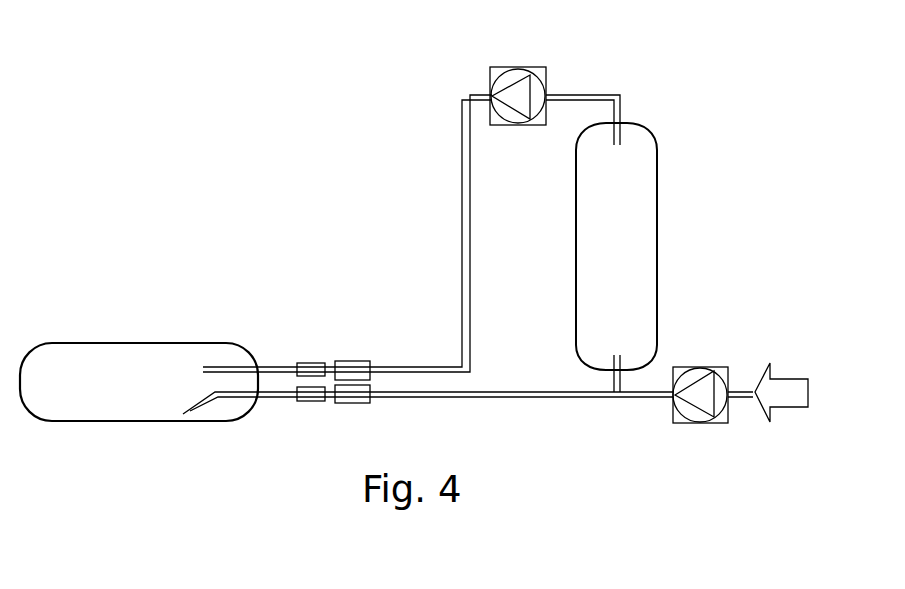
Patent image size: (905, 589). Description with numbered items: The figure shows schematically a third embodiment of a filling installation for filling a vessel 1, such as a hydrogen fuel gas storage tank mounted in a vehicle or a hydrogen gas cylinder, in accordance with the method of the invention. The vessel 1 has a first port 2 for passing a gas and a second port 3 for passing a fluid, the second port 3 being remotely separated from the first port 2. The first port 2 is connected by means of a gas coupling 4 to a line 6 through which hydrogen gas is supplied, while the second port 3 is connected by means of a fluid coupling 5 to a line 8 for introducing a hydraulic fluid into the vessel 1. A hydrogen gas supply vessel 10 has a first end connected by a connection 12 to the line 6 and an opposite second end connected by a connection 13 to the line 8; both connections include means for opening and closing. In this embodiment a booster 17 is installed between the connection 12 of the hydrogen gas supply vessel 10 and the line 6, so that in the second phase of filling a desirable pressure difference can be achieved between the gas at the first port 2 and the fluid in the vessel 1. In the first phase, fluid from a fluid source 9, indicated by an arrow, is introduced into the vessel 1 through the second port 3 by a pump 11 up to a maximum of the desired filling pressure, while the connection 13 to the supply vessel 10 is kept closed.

The vessel 1 is at (67, 341).
The first port 2 is at (315, 361).
The second port 3 is at (310, 403).
The gas coupling 4 is at (362, 360).
The fluid coupling 5 is at (351, 405).
The line 6 is at (468, 93).
The line 8 is at (498, 397).
The fluid source 9 is at (780, 386).
The hydrogen gas supply vessel 10 is at (658, 178).
The pump 11 is at (720, 424).
The connection 12 is at (619, 109).
The connection 13 is at (613, 380).
The booster 17 is at (545, 68).